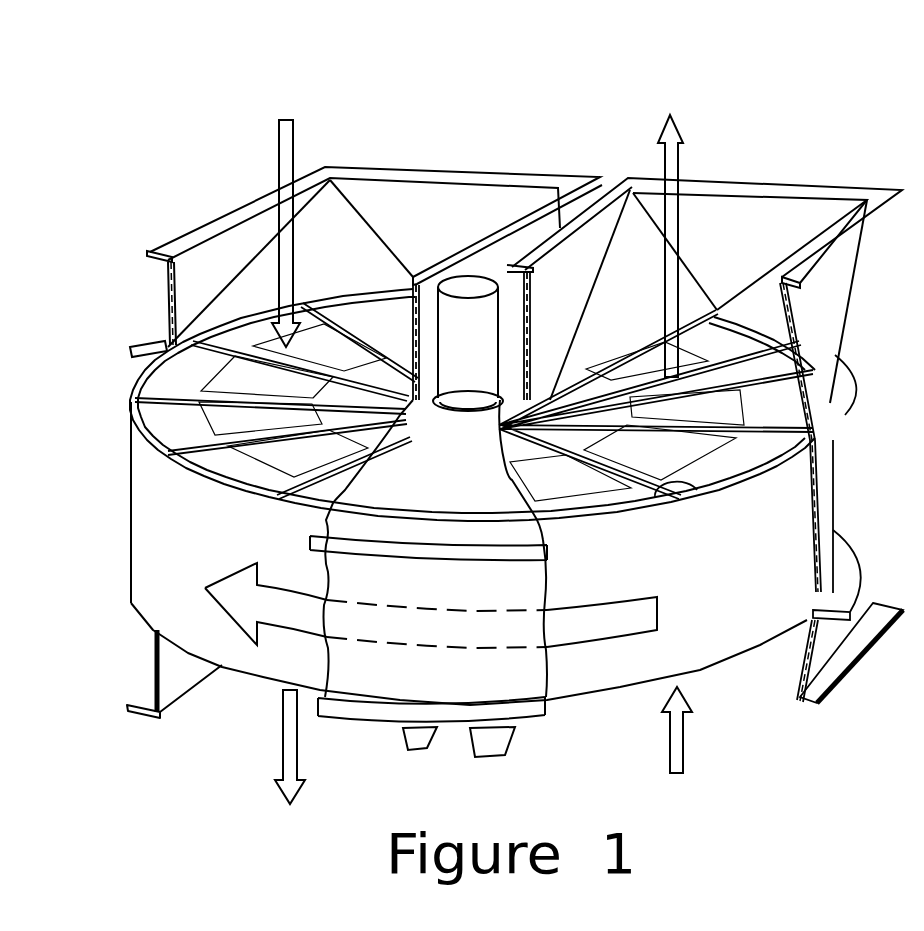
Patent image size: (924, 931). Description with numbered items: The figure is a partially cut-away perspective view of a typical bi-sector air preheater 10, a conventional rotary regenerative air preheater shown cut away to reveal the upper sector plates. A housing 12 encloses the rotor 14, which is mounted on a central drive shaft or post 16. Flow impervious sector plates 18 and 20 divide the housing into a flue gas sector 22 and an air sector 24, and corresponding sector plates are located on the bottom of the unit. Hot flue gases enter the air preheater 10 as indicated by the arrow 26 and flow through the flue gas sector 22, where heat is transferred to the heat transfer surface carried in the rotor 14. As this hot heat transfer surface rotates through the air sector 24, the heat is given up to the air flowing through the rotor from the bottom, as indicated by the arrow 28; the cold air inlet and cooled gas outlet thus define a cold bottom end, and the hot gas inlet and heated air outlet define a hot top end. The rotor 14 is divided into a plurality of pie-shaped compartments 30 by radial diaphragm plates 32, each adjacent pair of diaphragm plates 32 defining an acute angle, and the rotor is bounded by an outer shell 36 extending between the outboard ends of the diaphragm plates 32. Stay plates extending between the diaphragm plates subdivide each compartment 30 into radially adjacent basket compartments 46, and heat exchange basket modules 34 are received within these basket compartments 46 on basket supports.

The bi-sector air preheater 10 is at (753, 100).
The housing 12 is at (833, 477).
The rotor 14 is at (263, 668).
The drive shaft or post 16 is at (483, 330).
The sector plate 18 is at (451, 497).
The sector plate 20 is at (510, 383).
The flue gas sector 22 is at (410, 197).
The air sector 24 is at (763, 220).
The arrow 26 is at (278, 147).
The arrow 28 is at (680, 157).
The pie-shaped compartment 30 is at (190, 437).
The diaphragm plate 32 is at (700, 490).
The heat exchange basket module 34 is at (223, 610).
The shell 36 is at (727, 652).
The basket compartment 46 is at (563, 500).